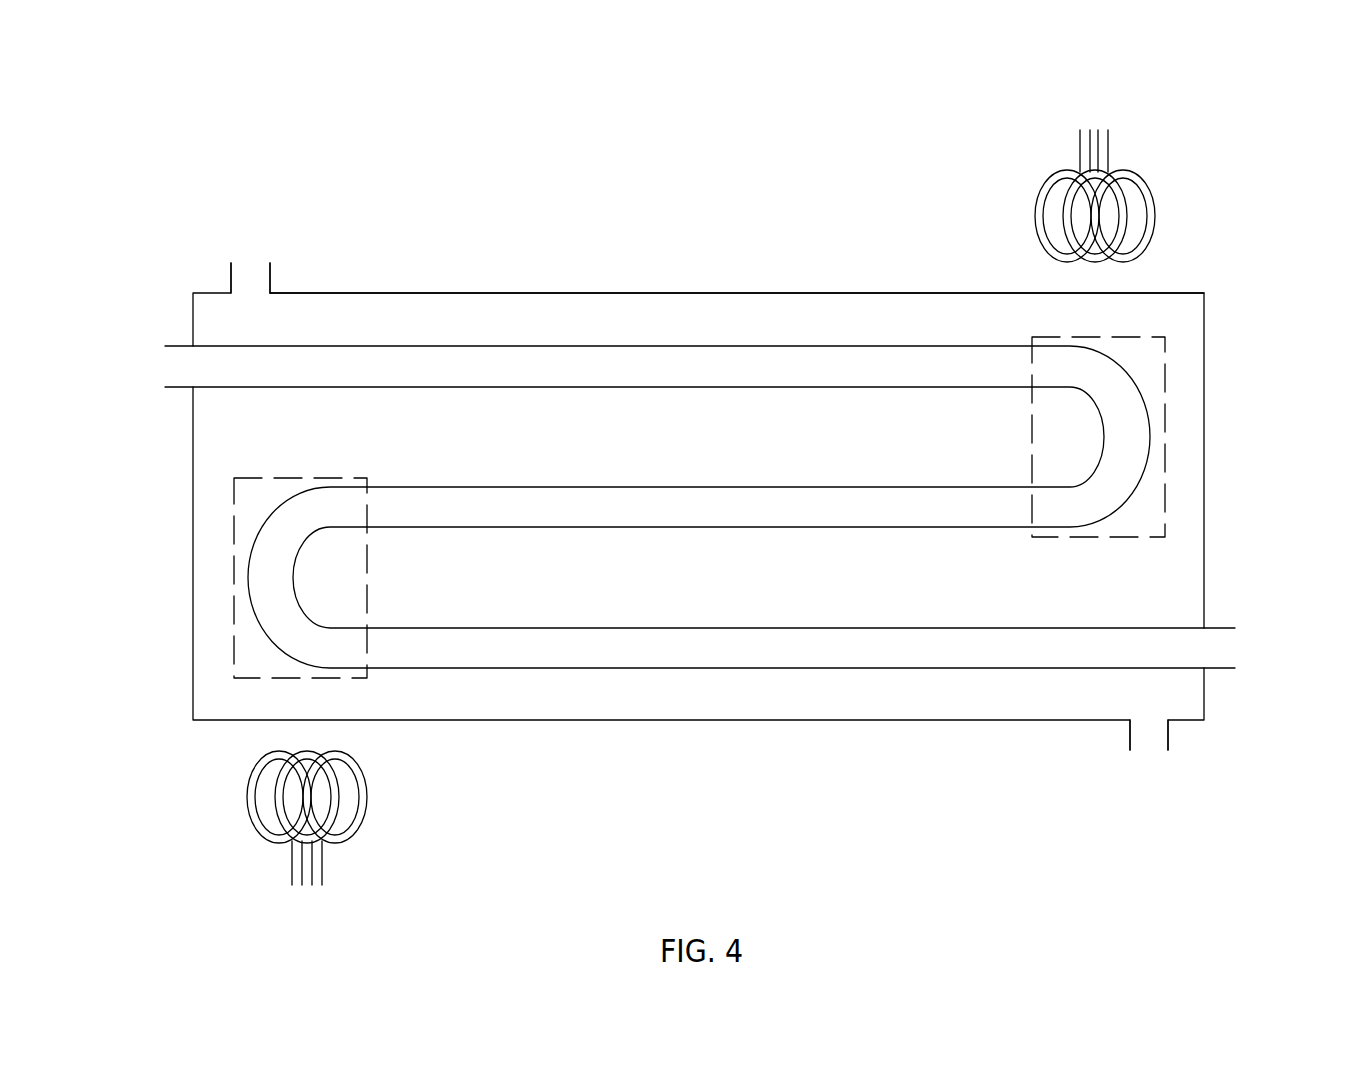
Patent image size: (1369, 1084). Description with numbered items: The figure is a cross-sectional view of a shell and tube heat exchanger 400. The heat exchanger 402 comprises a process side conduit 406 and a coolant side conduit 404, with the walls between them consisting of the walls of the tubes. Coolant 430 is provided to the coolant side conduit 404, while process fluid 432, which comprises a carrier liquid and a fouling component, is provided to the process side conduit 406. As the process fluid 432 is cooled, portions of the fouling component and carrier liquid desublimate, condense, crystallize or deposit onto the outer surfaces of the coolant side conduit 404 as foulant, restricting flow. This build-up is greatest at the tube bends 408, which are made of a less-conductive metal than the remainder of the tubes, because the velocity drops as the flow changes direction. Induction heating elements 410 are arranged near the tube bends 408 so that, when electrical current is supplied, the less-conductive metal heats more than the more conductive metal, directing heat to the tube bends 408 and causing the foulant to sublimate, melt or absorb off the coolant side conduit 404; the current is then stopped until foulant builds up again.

The cross-sectional view of a shell and tube heat exchanger 400 is at (188, 97).
The heat exchanger 402 is at (390, 293).
The coolant side conduit 404 is at (716, 310).
The process side conduit 406 is at (616, 508).
The tube bends 408 is at (234, 503).
The induction heating elements 410 is at (1035, 205).
The coolant 430 is at (252, 267).
The process fluid 432 is at (165, 366).